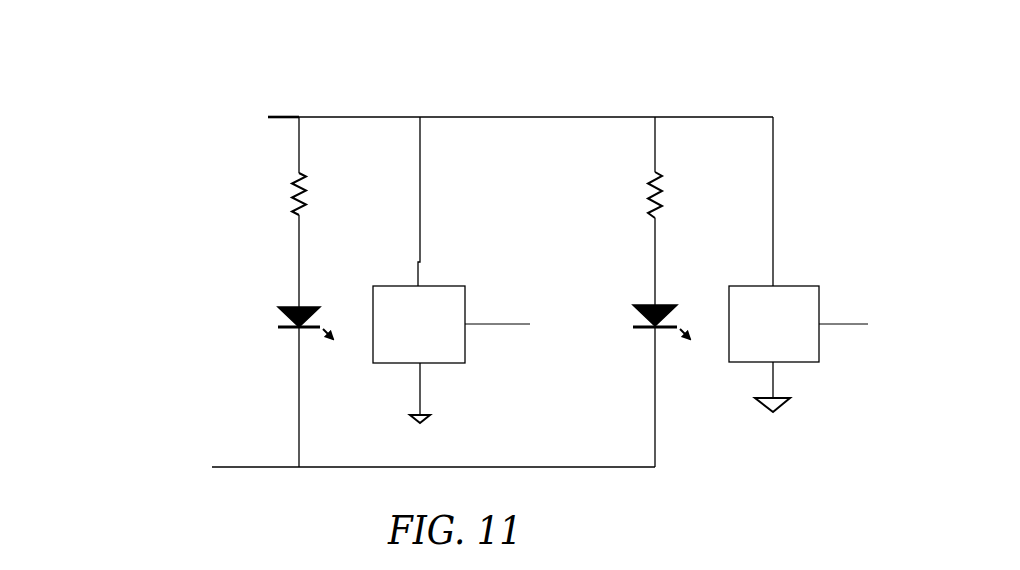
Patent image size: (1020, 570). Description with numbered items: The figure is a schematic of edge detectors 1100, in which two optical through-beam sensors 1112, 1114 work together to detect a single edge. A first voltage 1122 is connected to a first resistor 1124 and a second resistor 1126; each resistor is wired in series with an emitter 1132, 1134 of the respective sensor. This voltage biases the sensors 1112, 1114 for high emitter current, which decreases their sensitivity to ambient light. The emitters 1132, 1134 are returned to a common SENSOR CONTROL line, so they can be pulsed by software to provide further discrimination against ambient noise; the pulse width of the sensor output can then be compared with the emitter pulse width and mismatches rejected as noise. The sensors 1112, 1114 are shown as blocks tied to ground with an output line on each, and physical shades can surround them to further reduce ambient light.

The edge detectors 1100 is at (125, 78).
The first voltage 1122 is at (283, 83).
The first resistor 1124 is at (243, 212).
The second resistor 1126 is at (608, 212).
The emitter 1132 is at (287, 297).
The emitter 1134 is at (643, 297).
The optical through-beam sensor 1112 is at (453, 276).
The optical through-beam sensor 1114 is at (790, 278).